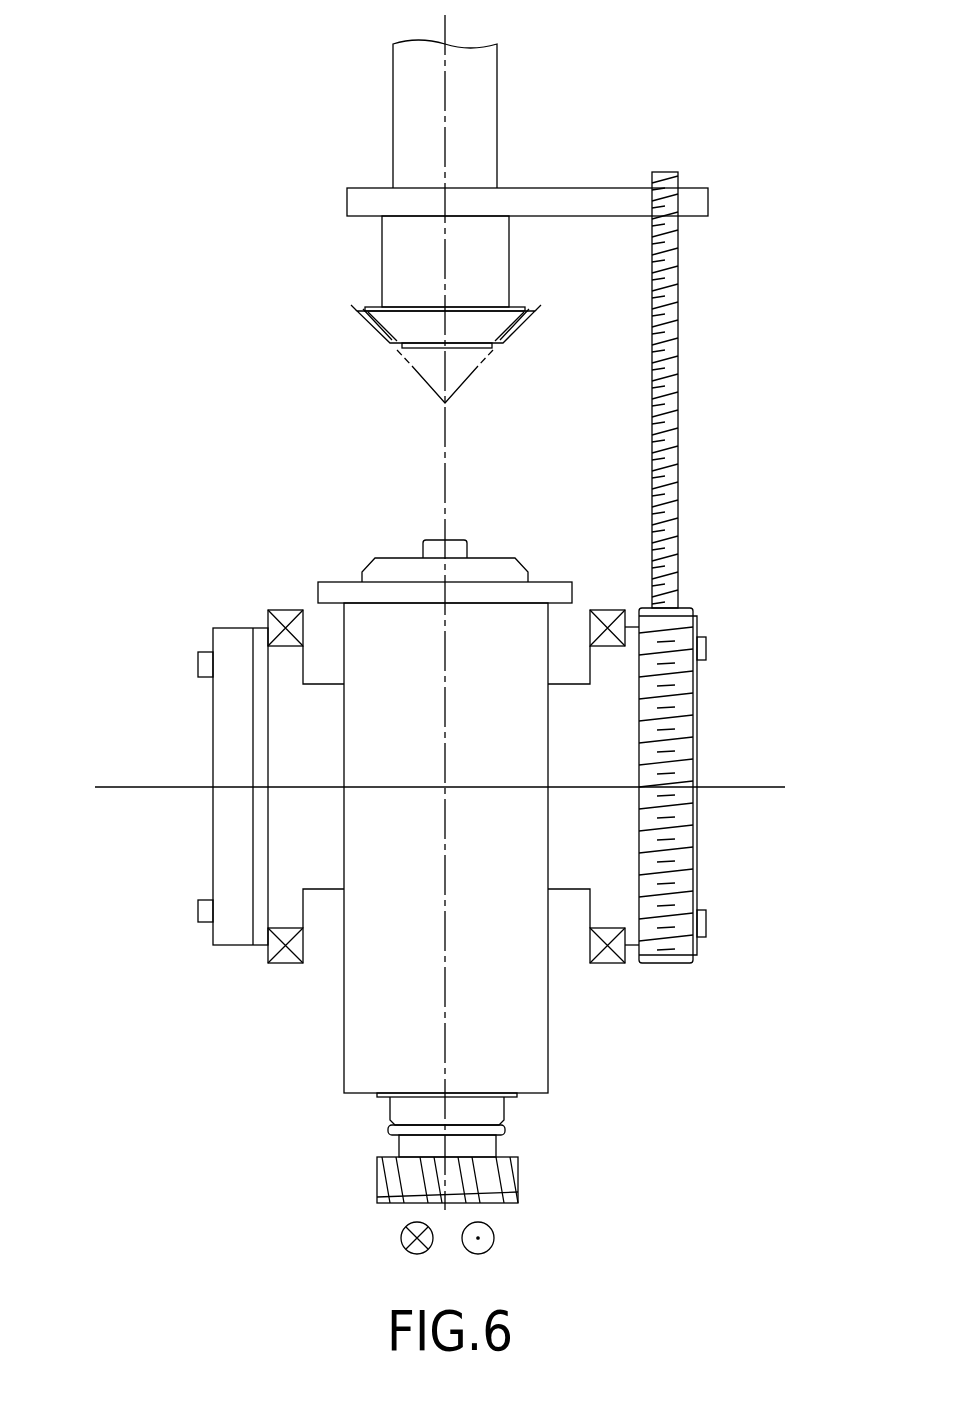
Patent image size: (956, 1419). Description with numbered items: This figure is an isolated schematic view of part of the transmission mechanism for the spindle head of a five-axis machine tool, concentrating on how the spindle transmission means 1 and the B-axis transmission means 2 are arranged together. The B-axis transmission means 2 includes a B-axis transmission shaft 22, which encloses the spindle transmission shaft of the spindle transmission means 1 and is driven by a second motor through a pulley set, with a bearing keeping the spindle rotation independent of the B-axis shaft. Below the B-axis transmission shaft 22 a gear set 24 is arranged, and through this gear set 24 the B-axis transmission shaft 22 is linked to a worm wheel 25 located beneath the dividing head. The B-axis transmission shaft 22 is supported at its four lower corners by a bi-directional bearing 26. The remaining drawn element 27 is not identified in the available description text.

The spindle transmission means 1 is at (526, 1150).
The B-axis transmission means 2 is at (538, 1003).
The B-axis transmission shaft 22 is at (478, 95).
The gear set 24 is at (578, 200).
The worm wheel 25 is at (682, 624).
The bi-directional bearing 26 is at (608, 955).
The screw rod 27 is at (612, 858).